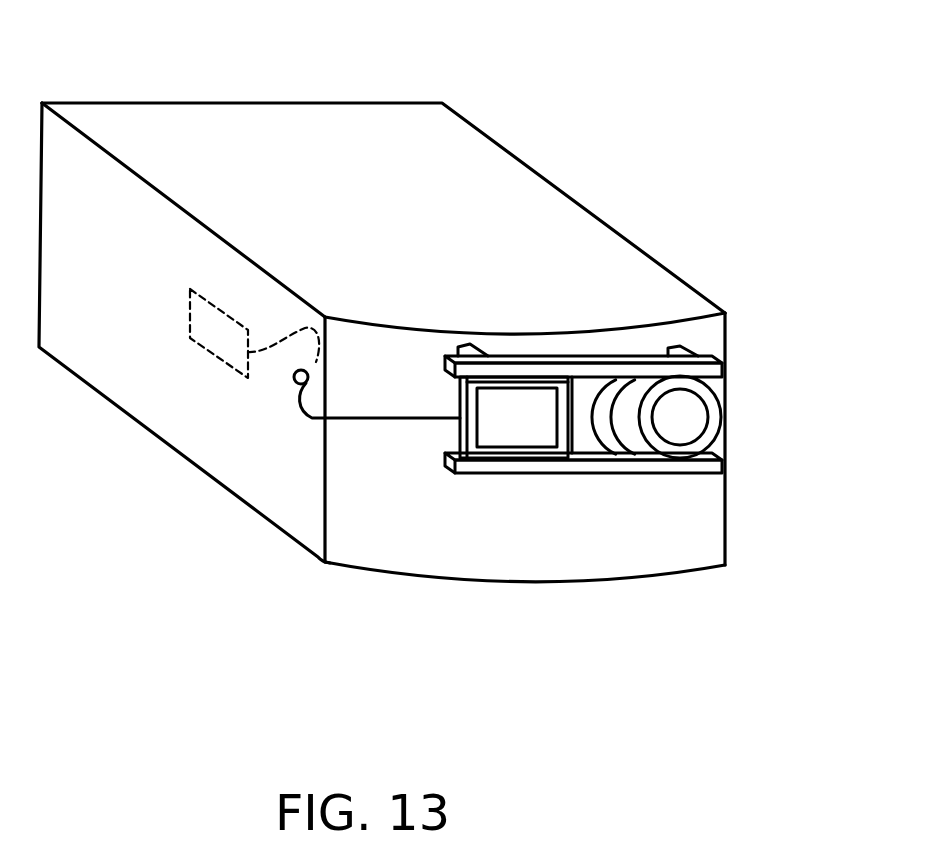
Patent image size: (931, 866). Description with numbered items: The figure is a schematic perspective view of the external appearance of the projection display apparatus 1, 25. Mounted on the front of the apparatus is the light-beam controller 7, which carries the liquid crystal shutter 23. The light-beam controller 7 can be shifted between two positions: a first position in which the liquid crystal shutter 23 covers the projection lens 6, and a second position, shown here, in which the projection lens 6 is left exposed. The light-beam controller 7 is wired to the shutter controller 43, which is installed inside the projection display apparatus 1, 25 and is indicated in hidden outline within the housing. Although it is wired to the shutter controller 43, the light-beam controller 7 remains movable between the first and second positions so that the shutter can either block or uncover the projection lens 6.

The projection display apparatus 1 is at (382, 299).
The projection display apparatus 25 is at (462, 105).
The shutter controller 43 is at (212, 360).
The projection lens 6 is at (713, 397).
The light-beam controller 7 is at (512, 519).
The liquid crystal shutter 23 is at (518, 438).